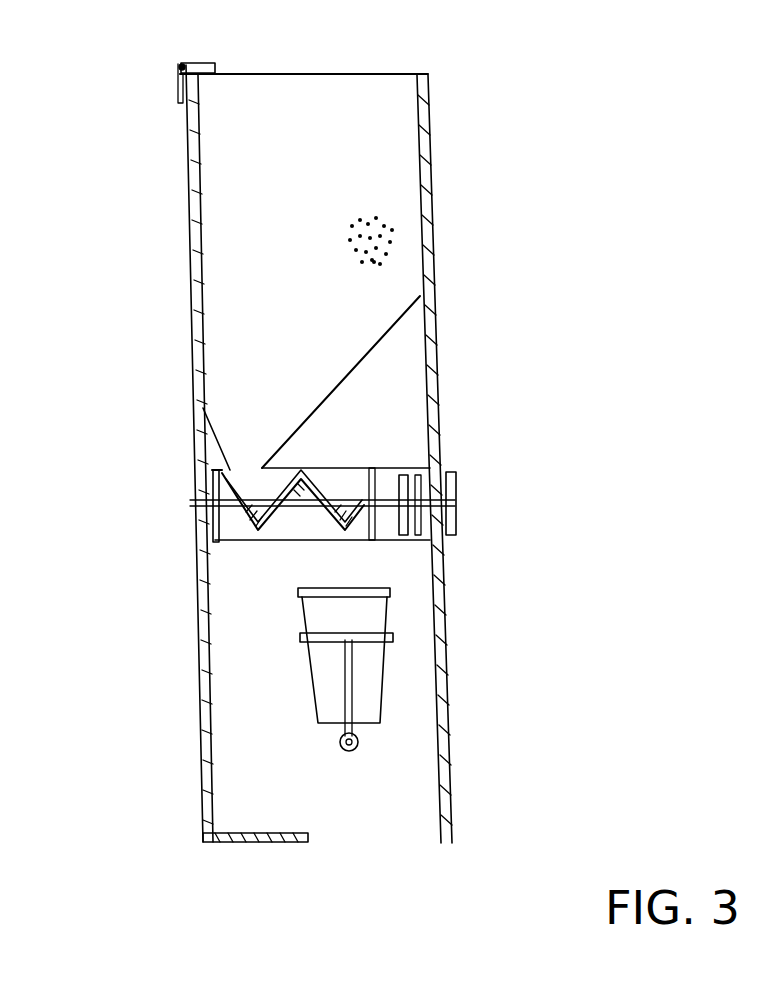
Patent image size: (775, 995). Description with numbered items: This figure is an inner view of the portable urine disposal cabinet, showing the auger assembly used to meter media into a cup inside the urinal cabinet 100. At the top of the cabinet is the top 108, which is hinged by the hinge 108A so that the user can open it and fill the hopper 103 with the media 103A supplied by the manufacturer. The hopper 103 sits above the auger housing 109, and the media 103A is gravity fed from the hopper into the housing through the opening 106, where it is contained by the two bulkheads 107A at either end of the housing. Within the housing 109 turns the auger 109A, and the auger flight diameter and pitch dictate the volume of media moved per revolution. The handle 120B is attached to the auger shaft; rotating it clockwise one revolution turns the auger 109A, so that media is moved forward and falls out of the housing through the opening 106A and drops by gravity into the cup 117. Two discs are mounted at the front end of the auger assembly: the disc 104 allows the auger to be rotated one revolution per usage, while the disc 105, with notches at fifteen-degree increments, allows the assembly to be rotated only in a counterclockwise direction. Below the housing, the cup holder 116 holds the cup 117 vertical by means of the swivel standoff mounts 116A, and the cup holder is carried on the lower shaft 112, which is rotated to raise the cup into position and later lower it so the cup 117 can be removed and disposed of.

The urinal cabinet 100 is at (432, 128).
The hopper 103 is at (256, 302).
The media 103A is at (376, 262).
The disc 104 is at (402, 475).
The disc 105 is at (437, 545).
The opening 106 is at (243, 474).
The opening 106A is at (346, 545).
The bulkheads 107A is at (208, 522).
The top 108 is at (350, 71).
The hinge 108A is at (197, 60).
The housing 109 is at (245, 548).
The auger 109A is at (212, 471).
The lower shaft 112 is at (338, 741).
The cup holder 116 is at (396, 637).
The swivel standoff mounts 116A is at (342, 675).
The cup 117 is at (384, 605).
The handle 120B is at (456, 470).